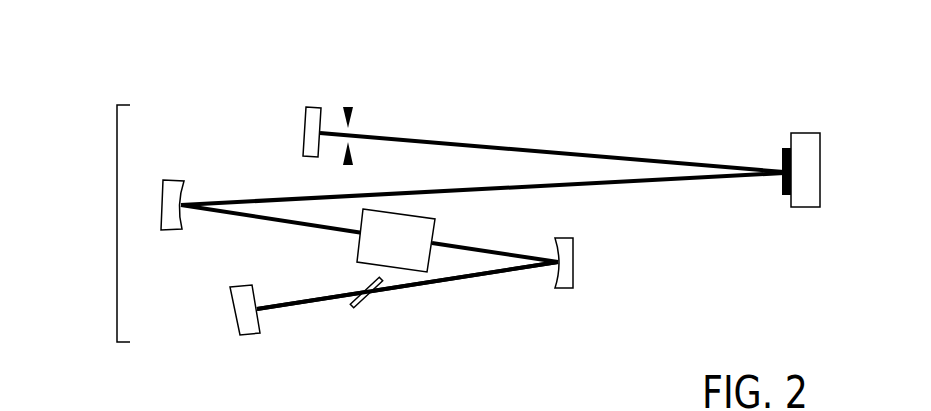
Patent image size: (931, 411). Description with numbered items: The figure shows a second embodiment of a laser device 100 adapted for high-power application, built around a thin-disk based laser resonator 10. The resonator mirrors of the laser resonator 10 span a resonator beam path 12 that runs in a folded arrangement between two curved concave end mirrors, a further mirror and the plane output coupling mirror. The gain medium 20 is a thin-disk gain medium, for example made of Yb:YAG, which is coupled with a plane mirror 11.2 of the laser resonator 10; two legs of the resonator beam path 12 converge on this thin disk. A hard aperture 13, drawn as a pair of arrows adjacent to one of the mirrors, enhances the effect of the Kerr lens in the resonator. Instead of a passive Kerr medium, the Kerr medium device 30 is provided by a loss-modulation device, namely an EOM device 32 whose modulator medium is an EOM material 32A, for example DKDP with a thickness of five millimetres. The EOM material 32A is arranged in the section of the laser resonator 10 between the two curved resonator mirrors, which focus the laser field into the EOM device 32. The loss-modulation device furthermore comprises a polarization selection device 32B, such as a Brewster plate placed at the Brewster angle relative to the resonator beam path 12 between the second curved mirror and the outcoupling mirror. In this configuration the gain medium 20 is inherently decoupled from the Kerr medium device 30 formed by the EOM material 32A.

The laser device 100 is at (130, 70).
The laser resonator 10 is at (117, 223).
The hard aperture 13 is at (349, 108).
The gain medium 20 is at (782, 150).
The plane mirror 11.2 is at (805, 198).
The resonator beam path 12 is at (433, 286).
The Kerr medium device 30 is at (342, 270).
The EOM device 32 is at (342, 327).
The EOM material 32A is at (363, 226).
The polarization selection device 32B is at (355, 306).